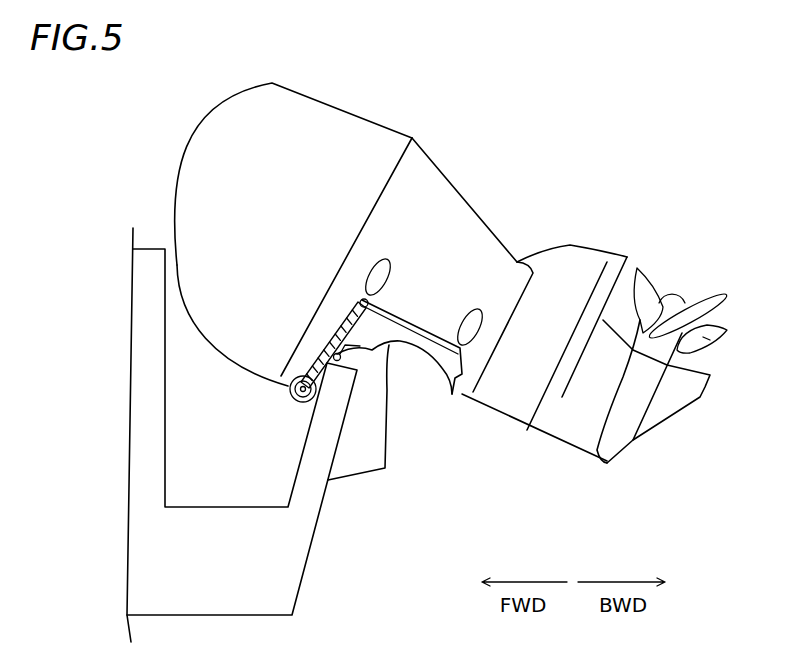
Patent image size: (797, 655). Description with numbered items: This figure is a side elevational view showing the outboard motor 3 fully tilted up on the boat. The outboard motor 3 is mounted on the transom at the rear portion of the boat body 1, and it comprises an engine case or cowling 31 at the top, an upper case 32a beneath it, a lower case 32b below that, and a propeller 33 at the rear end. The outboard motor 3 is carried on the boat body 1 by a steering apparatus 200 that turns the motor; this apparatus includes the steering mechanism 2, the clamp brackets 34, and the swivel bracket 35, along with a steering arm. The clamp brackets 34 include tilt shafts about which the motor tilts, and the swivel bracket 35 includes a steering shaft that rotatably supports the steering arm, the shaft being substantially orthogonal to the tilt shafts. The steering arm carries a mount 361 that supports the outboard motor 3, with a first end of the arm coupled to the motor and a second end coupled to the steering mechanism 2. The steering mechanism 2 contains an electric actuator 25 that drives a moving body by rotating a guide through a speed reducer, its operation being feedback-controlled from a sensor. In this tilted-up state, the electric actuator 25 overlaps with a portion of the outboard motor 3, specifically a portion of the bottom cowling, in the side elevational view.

The boat body 1 is at (320, 495).
The steering mechanism 2 is at (270, 392).
The outboard motor 3 is at (395, 131).
The electric actuator 25 is at (298, 402).
The engine case (cowling) 31 is at (325, 102).
The upper case 32a is at (467, 203).
The lower case 32b is at (553, 440).
The propeller 33 is at (723, 337).
The clamp bracket 34 is at (386, 470).
The swivel bracket 35 is at (417, 350).
The steering apparatus 200 is at (406, 452).
The mount 361 is at (385, 258).